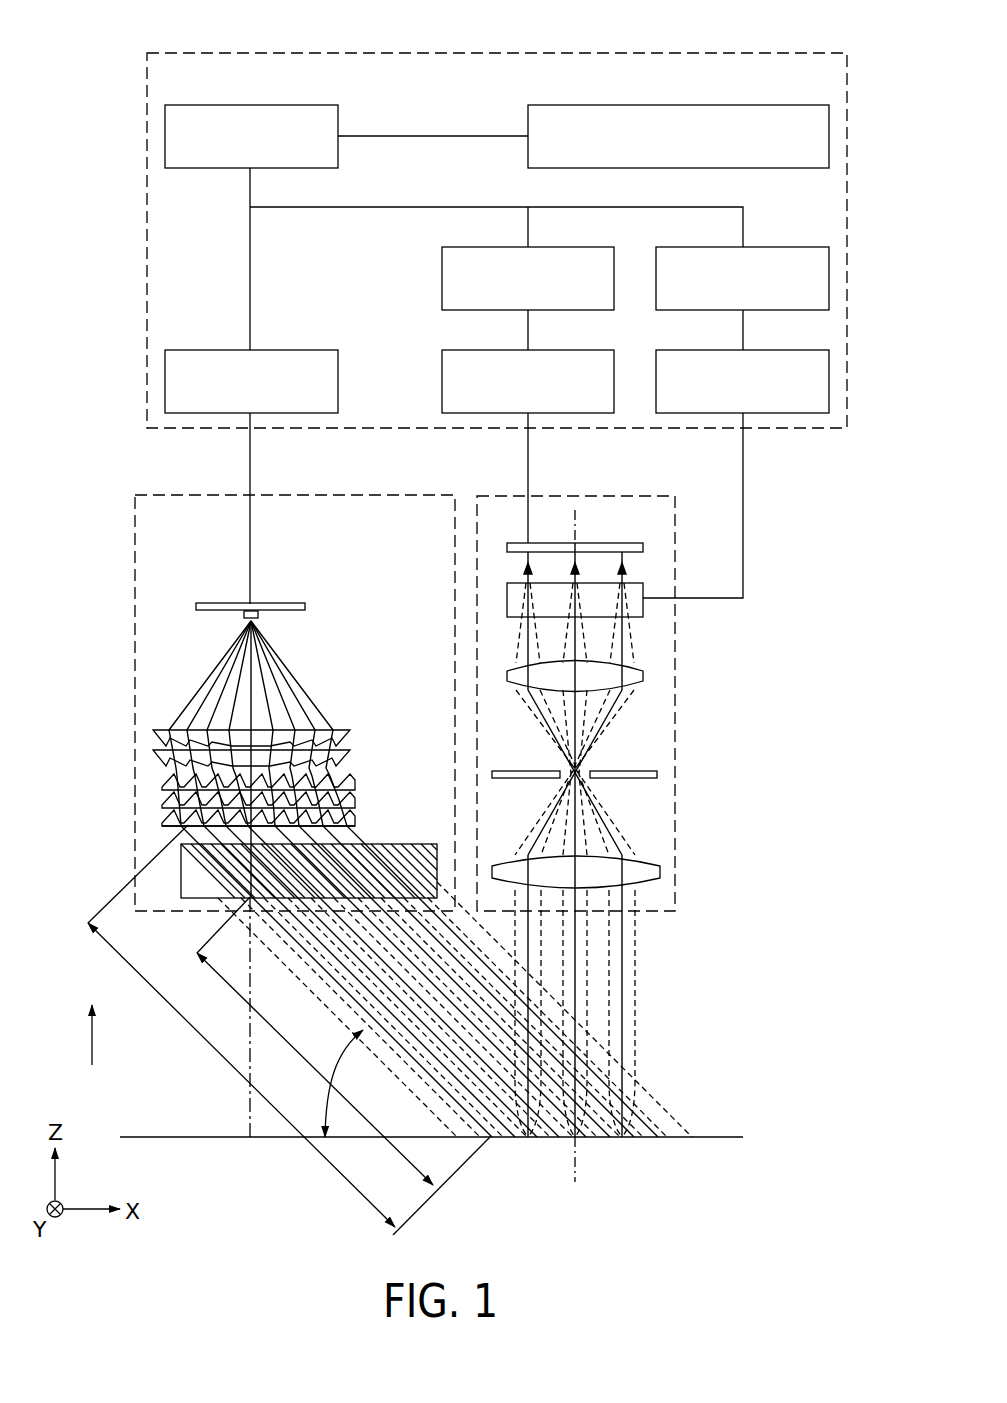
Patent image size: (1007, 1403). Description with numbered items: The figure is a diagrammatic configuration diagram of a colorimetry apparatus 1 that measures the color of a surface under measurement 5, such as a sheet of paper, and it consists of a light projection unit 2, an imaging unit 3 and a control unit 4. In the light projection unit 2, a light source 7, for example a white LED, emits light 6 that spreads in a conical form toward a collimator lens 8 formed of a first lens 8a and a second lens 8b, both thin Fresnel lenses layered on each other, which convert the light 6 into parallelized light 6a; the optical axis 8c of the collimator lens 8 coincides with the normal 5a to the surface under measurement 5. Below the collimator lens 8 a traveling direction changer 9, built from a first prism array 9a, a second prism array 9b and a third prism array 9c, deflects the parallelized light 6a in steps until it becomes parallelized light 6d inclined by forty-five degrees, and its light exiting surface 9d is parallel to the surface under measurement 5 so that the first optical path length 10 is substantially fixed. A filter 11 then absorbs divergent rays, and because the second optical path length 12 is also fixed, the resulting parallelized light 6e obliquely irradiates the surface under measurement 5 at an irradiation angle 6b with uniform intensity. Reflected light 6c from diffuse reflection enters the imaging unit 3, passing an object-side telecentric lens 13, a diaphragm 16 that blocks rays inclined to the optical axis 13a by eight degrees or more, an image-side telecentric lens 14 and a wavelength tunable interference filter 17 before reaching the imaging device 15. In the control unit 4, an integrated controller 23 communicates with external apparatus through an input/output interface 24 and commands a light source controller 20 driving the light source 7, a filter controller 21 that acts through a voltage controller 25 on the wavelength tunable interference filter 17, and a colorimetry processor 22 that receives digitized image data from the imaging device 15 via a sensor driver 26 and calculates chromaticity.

The colorimetry apparatus 1 is at (740, 34).
The light projection unit 2 is at (338, 495).
The imaging unit 3 is at (619, 495).
The control unit 4 is at (339, 52).
The surface under measurement 5 is at (157, 1137).
The normal 5a is at (92, 1035).
The light 6 is at (297, 678).
The parallelized light 6a is at (163, 777).
The irradiation angle 6b is at (346, 1060).
The reflected light 6c is at (628, 972).
The parallelized light 6d is at (186, 832).
The parallelized light 6e is at (441, 1087).
The light source 7 is at (260, 615).
The collimator lens 8 is at (299, 716).
The first lens 8a is at (352, 730).
The second lens 8b is at (350, 752).
The optical axis 8c is at (250, 1112).
The traveling direction changer 9 is at (304, 778).
The first prism array 9a is at (358, 776).
The second prism array 9b is at (358, 795).
The third prism array 9c is at (358, 813).
The light exiting surface 9d is at (288, 812).
The first optical path length 10 is at (275, 1104).
The filter 11 is at (181, 880).
The second optical path length 12 is at (275, 1026).
The object-side telecentric lens 13 is at (660, 868).
The optical axis 13a is at (578, 1170).
The image-side telecentric lens 14 is at (645, 669).
The imaging device 15 is at (645, 547).
The diaphragm 16 is at (658, 772).
The wavelength tunable interference filter 17 is at (645, 606).
The light source controller 20 is at (284, 350).
The filter controller 21 is at (773, 247).
The colorimetry processor 22 is at (558, 247).
The integrated controller 23 is at (284, 105).
The input/output interface 24 is at (775, 105).
The voltage controller 25 is at (773, 350).
The sensor driver 26 is at (558, 350).